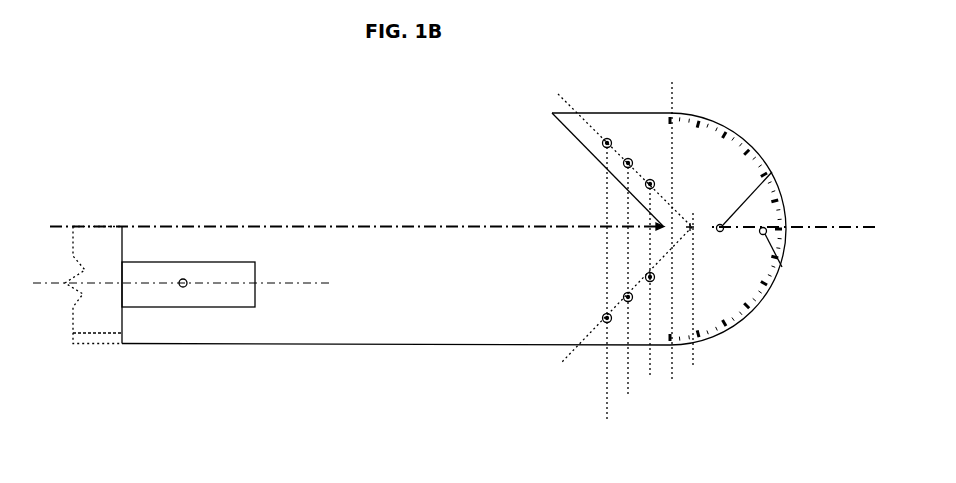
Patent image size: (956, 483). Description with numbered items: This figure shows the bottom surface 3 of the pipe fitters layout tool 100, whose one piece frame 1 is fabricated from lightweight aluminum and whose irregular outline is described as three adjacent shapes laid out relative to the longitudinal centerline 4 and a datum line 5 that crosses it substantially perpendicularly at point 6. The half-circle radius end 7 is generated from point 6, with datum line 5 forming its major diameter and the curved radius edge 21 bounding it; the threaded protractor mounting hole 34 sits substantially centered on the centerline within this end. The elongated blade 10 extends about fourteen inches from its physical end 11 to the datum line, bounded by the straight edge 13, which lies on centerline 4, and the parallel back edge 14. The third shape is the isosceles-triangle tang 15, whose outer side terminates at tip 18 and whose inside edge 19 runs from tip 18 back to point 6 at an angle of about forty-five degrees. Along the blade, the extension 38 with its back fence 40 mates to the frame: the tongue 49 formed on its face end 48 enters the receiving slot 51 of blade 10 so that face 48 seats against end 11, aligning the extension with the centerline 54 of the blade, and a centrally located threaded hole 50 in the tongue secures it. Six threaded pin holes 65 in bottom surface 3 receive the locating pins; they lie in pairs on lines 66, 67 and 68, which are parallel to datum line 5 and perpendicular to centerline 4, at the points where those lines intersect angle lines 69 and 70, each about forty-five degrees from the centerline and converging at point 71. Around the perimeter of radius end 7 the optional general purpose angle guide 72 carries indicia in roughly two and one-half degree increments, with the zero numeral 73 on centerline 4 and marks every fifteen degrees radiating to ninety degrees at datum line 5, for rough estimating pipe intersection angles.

The one piece frame 1 is at (482, 200).
The bottom surface 3 is at (440, 302).
The longitudinal centerline 4 is at (58, 225).
The datum line 5 is at (673, 82).
The point 6 is at (673, 227).
The radius end 7 is at (815, 135).
The blade 10 is at (302, 221).
The end 11 is at (122, 243).
The straight edge 13 is at (428, 226).
The back edge 14 is at (365, 345).
The tang 15 is at (632, 120).
The tip 18 is at (510, 0).
The inside edge 19 is at (570, 133).
The radius edge 21 is at (788, 215).
The threaded protractor mounting hole 34 is at (772, 175).
The extension 38 is at (80, 315).
The back fence 40 is at (110, 337).
The face end 48 is at (122, 323).
The tongue 49 is at (193, 308).
The threaded hole 50 is at (183, 278).
The receiving slot 51 is at (237, 292).
The centerline of blade 54 is at (48, 283).
The threaded pin holes 65 is at (604, 146).
The line 66 is at (650, 377).
The line 67 is at (628, 397).
The line 68 is at (607, 420).
The angle line 69 is at (570, 100).
The angle line 70 is at (562, 363).
The convergence point 71 is at (742, 297).
The general purpose angle guide 72 is at (753, 145).
The numeral "0" 73 is at (773, 267).
The pipe fitters layout tool 100 is at (335, 145).